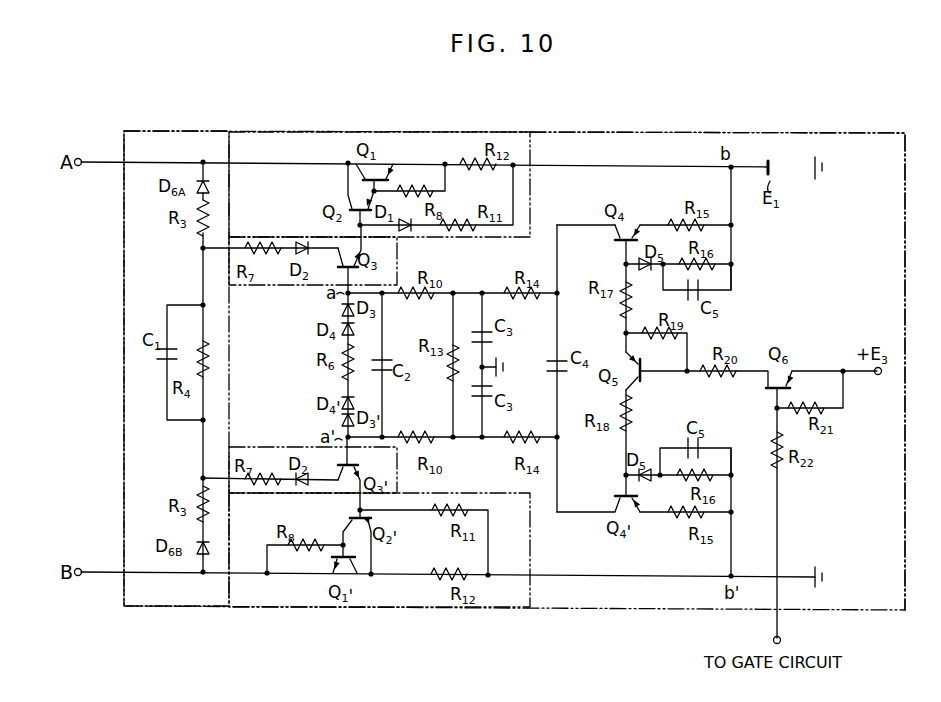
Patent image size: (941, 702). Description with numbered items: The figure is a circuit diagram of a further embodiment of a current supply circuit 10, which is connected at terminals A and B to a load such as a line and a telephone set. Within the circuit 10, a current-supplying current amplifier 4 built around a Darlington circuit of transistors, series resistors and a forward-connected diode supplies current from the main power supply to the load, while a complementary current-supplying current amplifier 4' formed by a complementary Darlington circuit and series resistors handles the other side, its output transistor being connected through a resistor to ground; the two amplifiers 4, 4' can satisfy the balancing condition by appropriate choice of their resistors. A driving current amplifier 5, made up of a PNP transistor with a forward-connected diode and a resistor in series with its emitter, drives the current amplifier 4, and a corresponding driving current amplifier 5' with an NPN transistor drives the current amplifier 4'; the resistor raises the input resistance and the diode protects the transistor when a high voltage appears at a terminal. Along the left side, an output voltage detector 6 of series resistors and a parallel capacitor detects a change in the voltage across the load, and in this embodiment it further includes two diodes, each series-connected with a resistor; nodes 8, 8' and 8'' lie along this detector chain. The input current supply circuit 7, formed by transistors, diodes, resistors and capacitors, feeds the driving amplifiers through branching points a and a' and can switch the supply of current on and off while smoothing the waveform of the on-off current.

The current supply circuit 10 is at (573, 125).
The current-supplying current amplifier 4 is at (379, 168).
The current-supplying current amplifier 4' is at (379, 565).
The driving current amplifier 5 is at (313, 280).
The driving current amplifier 5' is at (313, 451).
The output voltage detector 6 is at (128, 376).
The input current supply circuit 7 is at (801, 142).
The input terminal node 8 is at (195, 159).
The input terminal node 8' is at (191, 578).
The intermediate node 8'' is at (188, 269).